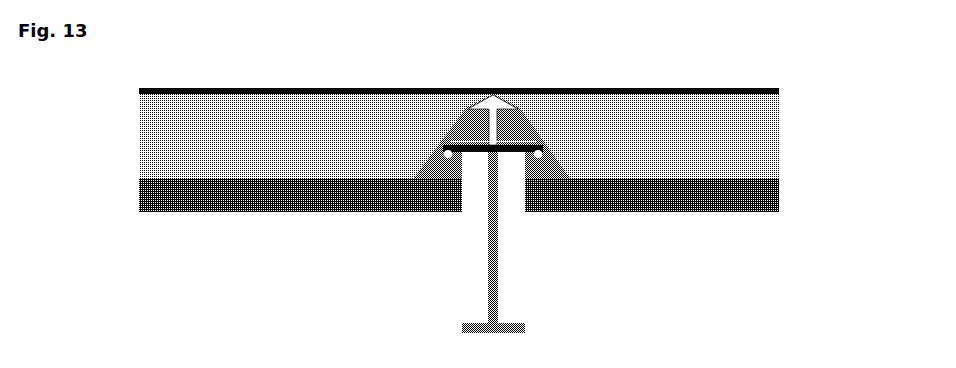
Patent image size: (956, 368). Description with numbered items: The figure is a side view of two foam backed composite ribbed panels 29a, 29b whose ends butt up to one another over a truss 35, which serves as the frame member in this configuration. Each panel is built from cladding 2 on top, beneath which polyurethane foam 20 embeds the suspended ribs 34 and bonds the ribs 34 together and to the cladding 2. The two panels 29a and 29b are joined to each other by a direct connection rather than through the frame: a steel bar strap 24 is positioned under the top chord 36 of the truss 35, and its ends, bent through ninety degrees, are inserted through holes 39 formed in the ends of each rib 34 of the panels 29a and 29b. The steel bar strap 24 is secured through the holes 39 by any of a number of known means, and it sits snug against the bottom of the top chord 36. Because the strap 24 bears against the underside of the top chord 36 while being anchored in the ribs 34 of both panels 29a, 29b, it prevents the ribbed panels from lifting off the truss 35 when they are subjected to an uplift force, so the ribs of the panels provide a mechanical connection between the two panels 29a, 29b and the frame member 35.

The cladding 2 is at (456, 70).
The ribbed panel 29a is at (200, 82).
The ribbed panel 29b is at (702, 77).
The top chord 36 is at (494, 98).
The polyurethane foam 20 is at (192, 147).
The suspended rib 34 is at (150, 212).
The hole 39 is at (412, 207).
The steel bar strap 24 is at (498, 153).
The truss 35 is at (485, 257).